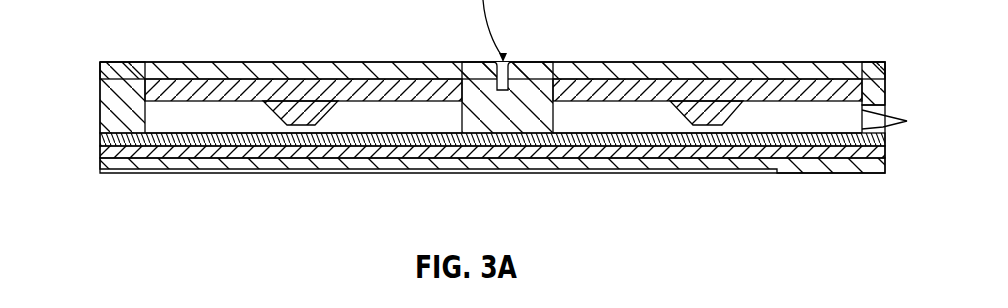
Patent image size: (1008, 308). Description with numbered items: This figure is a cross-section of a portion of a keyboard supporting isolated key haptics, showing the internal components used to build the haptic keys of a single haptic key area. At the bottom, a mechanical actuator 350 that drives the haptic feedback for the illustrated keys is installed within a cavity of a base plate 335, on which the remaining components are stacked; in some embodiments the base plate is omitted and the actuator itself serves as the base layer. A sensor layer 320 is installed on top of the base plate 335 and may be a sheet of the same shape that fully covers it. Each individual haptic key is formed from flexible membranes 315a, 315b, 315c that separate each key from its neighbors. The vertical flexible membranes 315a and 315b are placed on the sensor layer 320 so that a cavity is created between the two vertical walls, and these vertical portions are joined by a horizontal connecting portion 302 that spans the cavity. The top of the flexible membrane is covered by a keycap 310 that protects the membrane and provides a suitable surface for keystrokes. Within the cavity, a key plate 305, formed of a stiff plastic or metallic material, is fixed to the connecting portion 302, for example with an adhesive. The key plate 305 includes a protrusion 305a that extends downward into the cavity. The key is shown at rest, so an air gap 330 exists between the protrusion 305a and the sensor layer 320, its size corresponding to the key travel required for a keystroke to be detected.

The horizontal connecting portion 302 is at (230, 68).
The key plate 305 is at (226, 92).
The protrusion 305a is at (290, 106).
The keycap 310 is at (338, 67).
The vertical flexible membrane 315a is at (122, 75).
The vertical flexible membrane 315b is at (482, 92).
The flexible membrane 315c is at (518, 90).
The sensor layer 320 is at (105, 140).
The air gap 330 is at (307, 138).
The base plate 335 is at (105, 153).
The mechanical actuator 350 is at (721, 170).